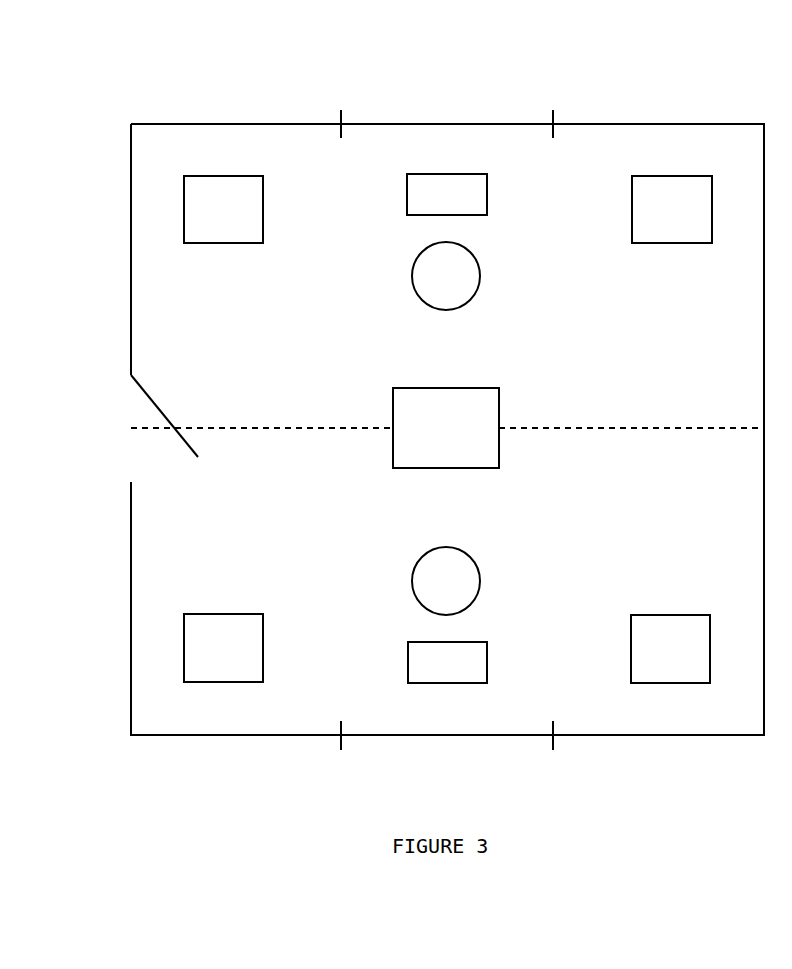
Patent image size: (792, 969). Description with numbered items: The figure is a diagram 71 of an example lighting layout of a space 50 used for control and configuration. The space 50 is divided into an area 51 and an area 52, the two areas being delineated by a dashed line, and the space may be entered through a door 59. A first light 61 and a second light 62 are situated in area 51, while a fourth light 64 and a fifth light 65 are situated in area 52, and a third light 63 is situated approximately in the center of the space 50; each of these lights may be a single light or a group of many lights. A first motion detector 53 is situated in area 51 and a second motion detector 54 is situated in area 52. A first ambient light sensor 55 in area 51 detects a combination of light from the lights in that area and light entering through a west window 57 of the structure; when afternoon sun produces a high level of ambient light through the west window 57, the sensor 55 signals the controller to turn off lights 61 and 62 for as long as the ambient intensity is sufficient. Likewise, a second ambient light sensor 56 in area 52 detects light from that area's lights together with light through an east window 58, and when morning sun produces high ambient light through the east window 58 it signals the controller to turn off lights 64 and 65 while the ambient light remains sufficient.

The space 50 is at (638, 124).
The area 51 is at (461, 366).
The area 52 is at (461, 510).
The motion detector 53 is at (472, 256).
The motion detector 54 is at (473, 558).
The ambient light sensor 55 is at (487, 174).
The ambient light sensor 56 is at (487, 642).
The west window 57 is at (449, 108).
The east window 58 is at (501, 721).
The door 59 is at (155, 442).
The light 61 is at (263, 176).
The light 62 is at (632, 243).
The light 63 is at (499, 388).
The light 64 is at (263, 614).
The light 65 is at (631, 615).
The diagram 71 is at (635, 82).